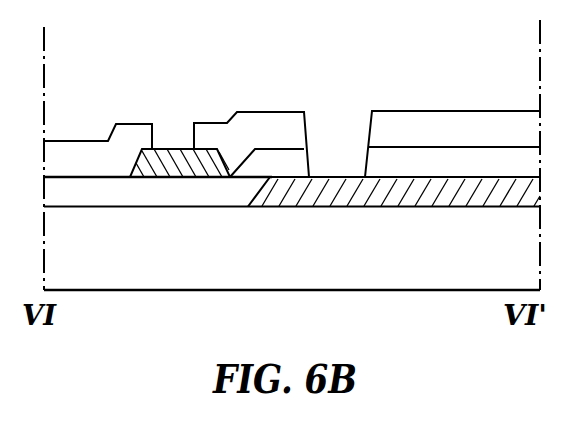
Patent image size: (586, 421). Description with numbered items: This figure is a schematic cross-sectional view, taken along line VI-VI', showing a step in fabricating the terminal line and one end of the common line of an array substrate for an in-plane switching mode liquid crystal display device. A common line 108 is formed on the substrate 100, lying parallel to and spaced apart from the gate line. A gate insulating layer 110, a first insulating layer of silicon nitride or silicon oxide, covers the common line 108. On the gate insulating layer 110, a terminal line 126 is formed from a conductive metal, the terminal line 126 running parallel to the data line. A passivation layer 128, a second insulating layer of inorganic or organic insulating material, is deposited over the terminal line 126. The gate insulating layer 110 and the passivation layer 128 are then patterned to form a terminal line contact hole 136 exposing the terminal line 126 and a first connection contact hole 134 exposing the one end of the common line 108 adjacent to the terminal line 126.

The substrate 100 is at (273, 261).
The common line 108 is at (336, 178).
The gate insulating layer 110 is at (492, 140).
The terminal line 126 is at (180, 178).
The passivation layer 128 is at (447, 102).
The first connection contact hole 134 is at (335, 126).
The terminal line contact hole 136 is at (172, 122).